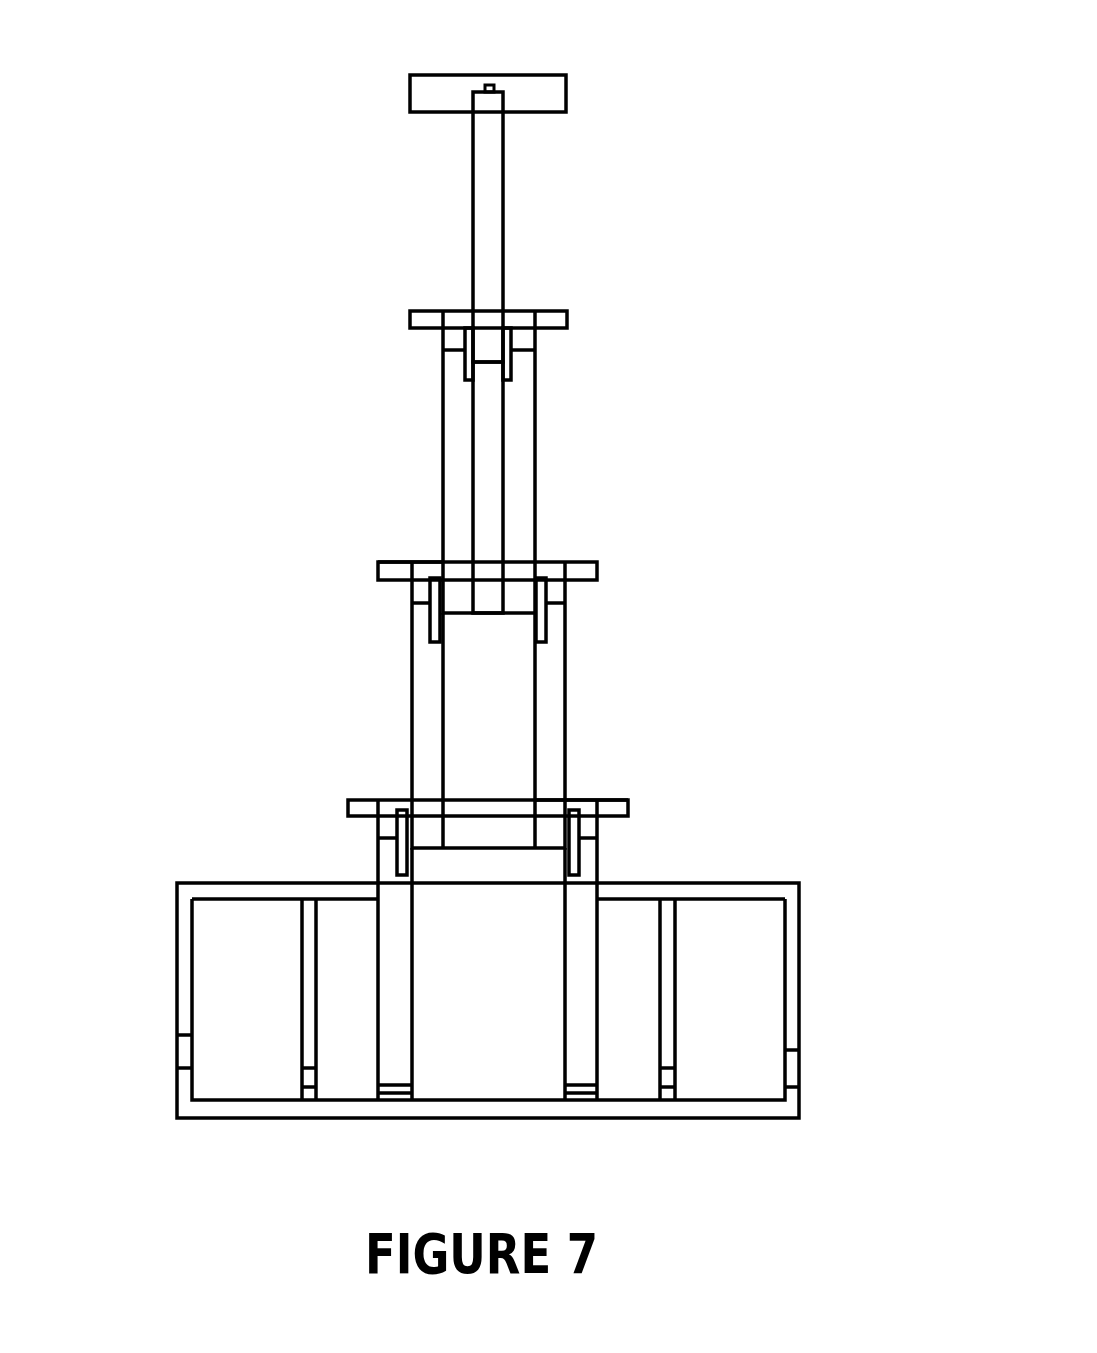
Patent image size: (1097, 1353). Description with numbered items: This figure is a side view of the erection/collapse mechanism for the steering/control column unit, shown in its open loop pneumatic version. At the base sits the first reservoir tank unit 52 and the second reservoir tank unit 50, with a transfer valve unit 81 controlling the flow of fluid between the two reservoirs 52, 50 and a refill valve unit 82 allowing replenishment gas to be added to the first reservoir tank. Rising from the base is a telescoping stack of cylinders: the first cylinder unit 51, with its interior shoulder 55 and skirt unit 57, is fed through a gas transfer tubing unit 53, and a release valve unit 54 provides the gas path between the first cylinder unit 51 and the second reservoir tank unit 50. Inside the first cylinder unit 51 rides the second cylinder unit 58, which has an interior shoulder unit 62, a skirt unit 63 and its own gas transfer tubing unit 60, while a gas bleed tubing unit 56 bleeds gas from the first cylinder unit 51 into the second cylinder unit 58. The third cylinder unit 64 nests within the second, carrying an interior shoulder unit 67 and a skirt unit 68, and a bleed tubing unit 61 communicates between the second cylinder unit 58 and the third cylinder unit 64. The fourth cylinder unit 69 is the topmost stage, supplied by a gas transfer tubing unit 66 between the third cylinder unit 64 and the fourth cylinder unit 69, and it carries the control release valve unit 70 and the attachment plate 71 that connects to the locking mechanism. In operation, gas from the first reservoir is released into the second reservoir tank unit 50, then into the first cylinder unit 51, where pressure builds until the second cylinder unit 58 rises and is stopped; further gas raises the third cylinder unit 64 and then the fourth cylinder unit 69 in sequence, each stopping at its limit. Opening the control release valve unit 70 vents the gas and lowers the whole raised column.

The second reservoir tank unit 50 is at (347, 1103).
The first cylinder unit 51 is at (376, 855).
The first reservoir tank unit 52 is at (192, 970).
The gas transfer tubing unit 53 is at (582, 846).
The release valve unit 54 is at (560, 1080).
The interior shoulder 55 is at (397, 850).
The gas bleed tubing unit 56 is at (562, 812).
The skirt unit 57 is at (347, 800).
The second cylinder unit 58 is at (410, 666).
The gas transfer tubing unit 60 is at (418, 576).
The bleed tubing unit 61 is at (525, 574).
The interior shoulder unit 62 is at (552, 607).
The skirt unit 63 is at (590, 560).
The third cylinder unit 64 is at (440, 428).
The gas transfer tubing unit 66 is at (514, 344).
The interior shoulder unit 67 is at (462, 347).
The skirt unit 68 is at (420, 310).
The fourth cylinder unit 69 is at (472, 243).
The control release valve unit 70 is at (482, 79).
The attachment plate 71 is at (569, 92).
The transfer valve unit 81 is at (302, 1080).
The refill valve unit 82 is at (177, 1053).